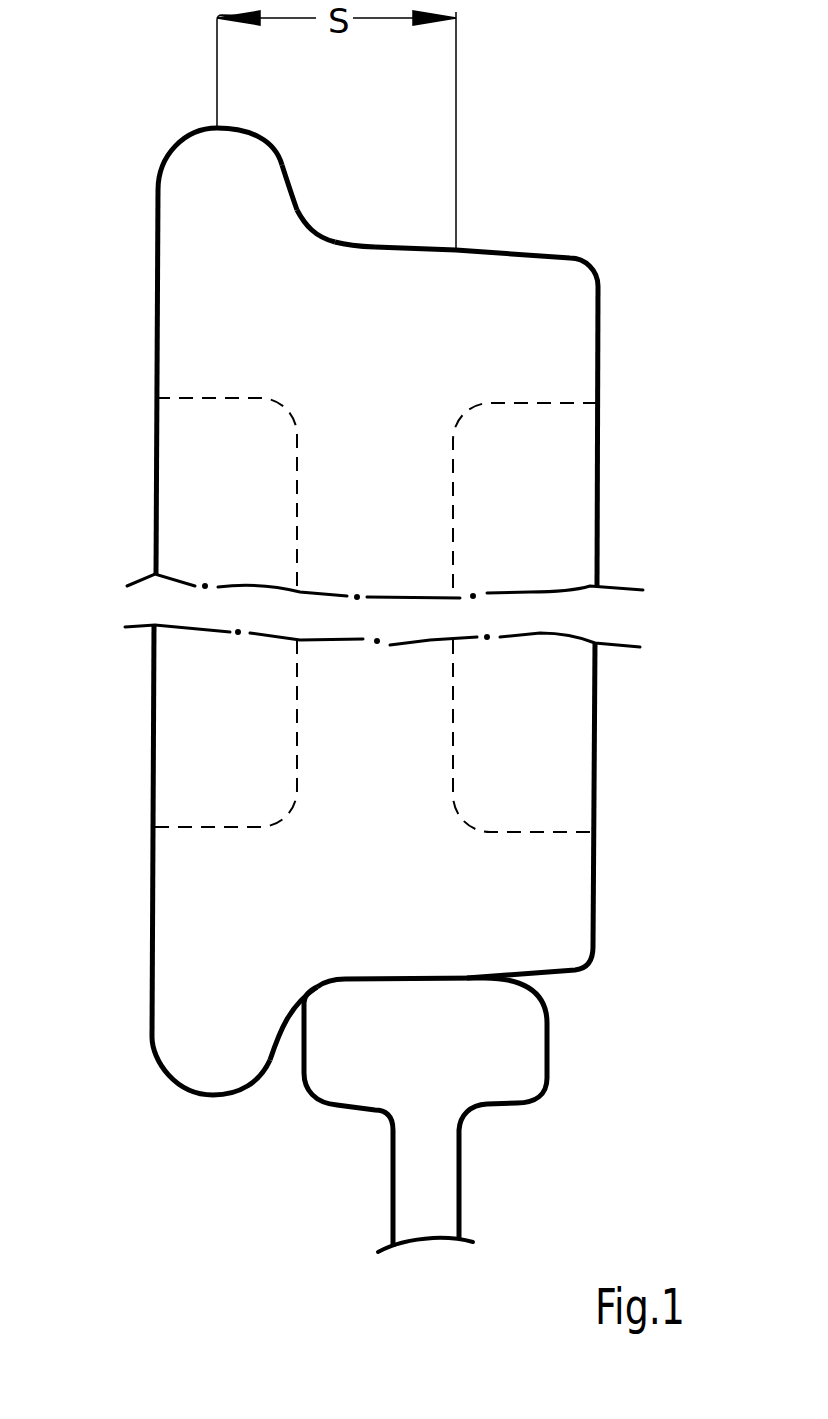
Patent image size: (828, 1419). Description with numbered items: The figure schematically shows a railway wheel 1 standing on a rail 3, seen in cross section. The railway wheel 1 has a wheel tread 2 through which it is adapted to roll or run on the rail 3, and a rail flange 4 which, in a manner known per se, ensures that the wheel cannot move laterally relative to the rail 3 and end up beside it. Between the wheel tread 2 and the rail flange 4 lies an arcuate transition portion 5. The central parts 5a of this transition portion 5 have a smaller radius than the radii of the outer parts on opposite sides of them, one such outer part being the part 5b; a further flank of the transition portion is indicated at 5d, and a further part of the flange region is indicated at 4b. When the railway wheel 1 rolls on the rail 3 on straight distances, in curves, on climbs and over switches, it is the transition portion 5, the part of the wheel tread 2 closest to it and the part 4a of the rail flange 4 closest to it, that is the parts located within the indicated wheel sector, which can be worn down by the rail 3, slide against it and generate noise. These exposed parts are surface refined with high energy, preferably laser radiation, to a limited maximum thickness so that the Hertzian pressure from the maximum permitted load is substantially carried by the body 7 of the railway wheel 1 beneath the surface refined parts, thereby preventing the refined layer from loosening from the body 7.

The railway wheel 1 is at (572, 737).
The wheel tread 2 is at (397, 247).
The rail 3 is at (522, 1033).
The rail flange 4 is at (190, 1093).
The part of the rail flange 4a is at (262, 137).
The bead inner portion 4b is at (203, 130).
The arcuate transition portion 5 is at (305, 993).
The central parts of the transition portion 5a is at (307, 220).
The outer part of the transition portion 5b is at (343, 238).
The groove wall 5d is at (287, 177).
The body of the railway wheel 7 is at (560, 315).